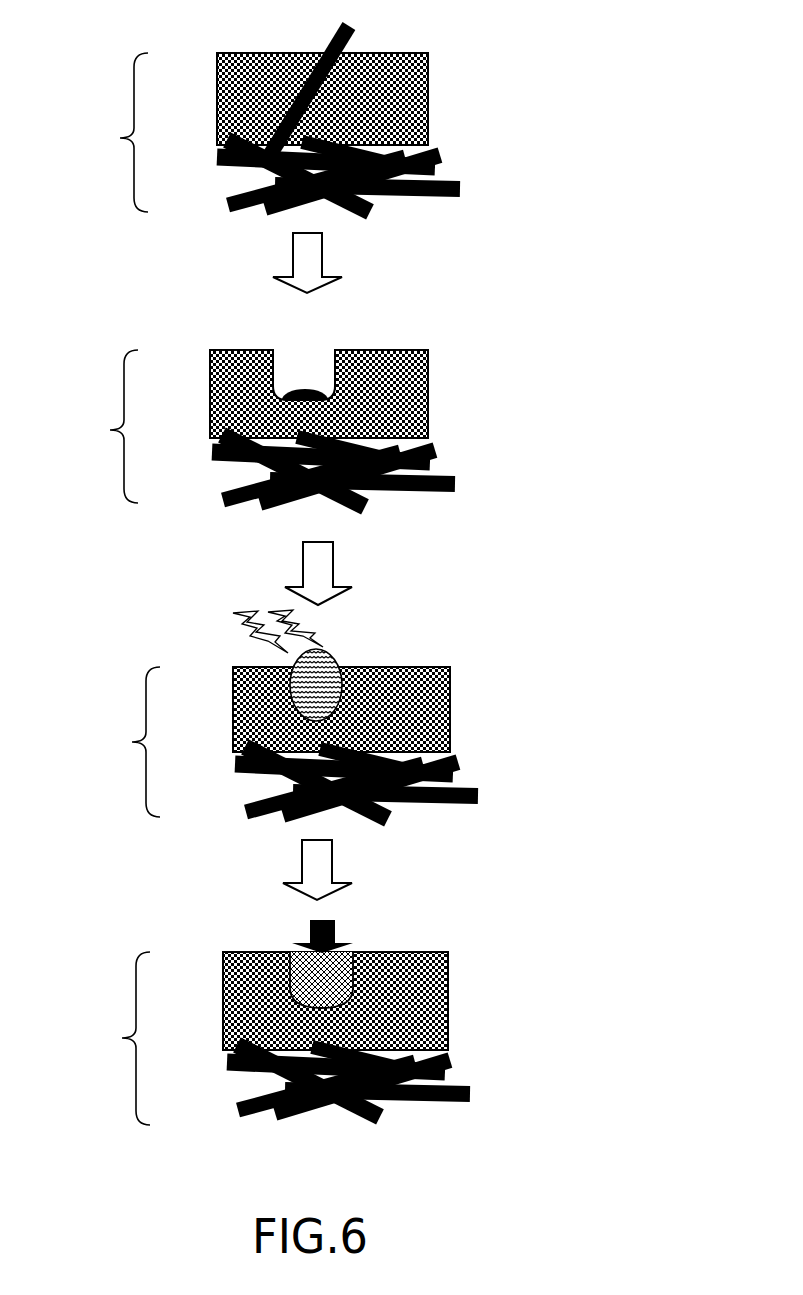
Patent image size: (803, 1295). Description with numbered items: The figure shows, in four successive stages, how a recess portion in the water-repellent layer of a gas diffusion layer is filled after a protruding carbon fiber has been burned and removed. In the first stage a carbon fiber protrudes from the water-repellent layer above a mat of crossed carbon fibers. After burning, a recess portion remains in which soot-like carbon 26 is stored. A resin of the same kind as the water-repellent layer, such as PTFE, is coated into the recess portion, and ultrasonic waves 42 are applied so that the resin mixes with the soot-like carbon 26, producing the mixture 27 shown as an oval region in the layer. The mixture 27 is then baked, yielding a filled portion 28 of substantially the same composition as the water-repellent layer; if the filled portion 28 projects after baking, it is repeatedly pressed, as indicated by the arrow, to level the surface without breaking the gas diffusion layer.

The soot-like carbon 26 is at (310, 388).
The mixture 27 is at (345, 665).
The filled portion 28 is at (337, 953).
The laser light 42 is at (233, 614).